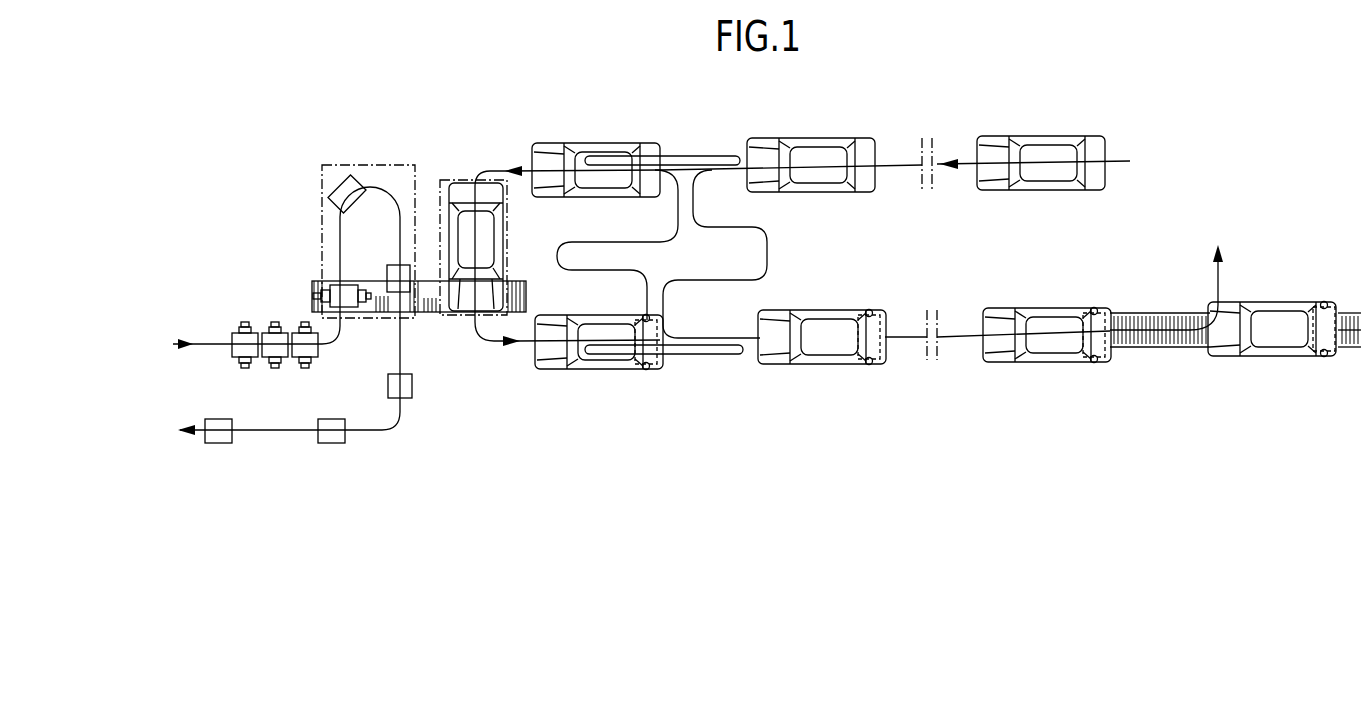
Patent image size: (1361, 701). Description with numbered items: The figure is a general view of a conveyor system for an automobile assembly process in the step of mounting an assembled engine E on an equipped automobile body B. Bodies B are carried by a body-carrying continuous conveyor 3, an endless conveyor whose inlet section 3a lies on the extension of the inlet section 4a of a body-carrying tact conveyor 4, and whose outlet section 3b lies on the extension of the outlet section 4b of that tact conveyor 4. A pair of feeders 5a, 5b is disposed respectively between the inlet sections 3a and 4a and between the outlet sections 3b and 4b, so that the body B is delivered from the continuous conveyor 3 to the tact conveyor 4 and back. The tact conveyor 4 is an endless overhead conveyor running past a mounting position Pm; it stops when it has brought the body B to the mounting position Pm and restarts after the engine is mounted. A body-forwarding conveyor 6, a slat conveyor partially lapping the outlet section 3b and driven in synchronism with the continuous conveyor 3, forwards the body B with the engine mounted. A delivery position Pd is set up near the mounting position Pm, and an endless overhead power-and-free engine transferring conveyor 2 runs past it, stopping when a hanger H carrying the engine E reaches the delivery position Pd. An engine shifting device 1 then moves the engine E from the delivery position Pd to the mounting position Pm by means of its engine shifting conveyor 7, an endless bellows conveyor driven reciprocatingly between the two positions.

The engine shifting device 1 is at (368, 270).
The engine transferring conveyor 2 is at (207, 344).
The body-carrying continuous conveyor 3 is at (953, 158).
The inlet section 3a is at (895, 168).
The outlet section 3b is at (908, 338).
The body-carrying tact conveyor 4 is at (470, 336).
The inlet section 4a is at (493, 170).
The outlet section 4b is at (520, 349).
The feeder 5a is at (708, 156).
The feeder 5b is at (718, 355).
The body-forwarding conveyor 6 is at (1163, 350).
The engine shifting conveyor 7 is at (374, 308).
The automobile body B is at (598, 142).
The engine E is at (263, 333).
The hanger H is at (297, 350).
The delivery position Pd is at (350, 166).
The mounting position Pm is at (450, 178).